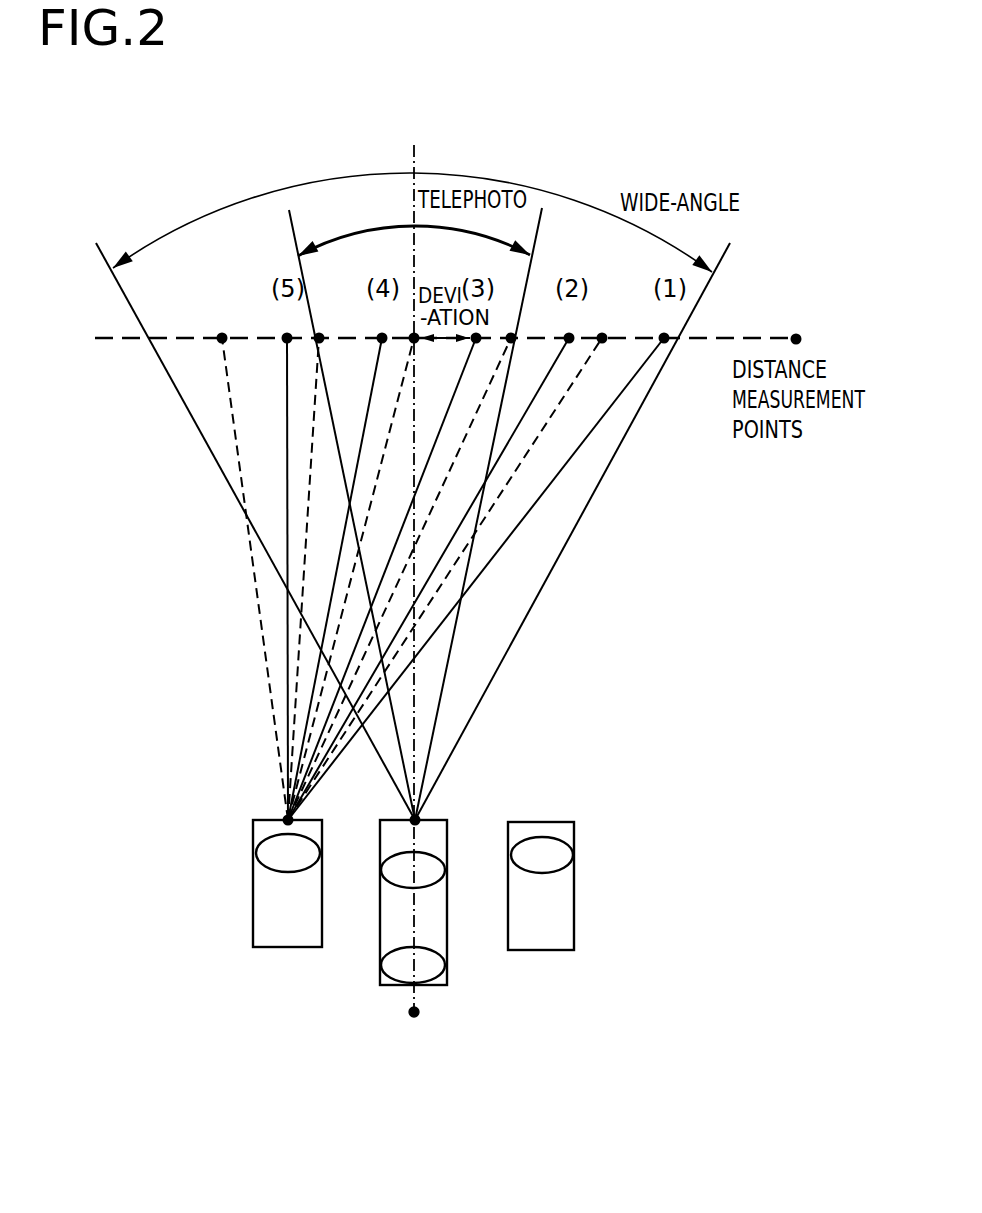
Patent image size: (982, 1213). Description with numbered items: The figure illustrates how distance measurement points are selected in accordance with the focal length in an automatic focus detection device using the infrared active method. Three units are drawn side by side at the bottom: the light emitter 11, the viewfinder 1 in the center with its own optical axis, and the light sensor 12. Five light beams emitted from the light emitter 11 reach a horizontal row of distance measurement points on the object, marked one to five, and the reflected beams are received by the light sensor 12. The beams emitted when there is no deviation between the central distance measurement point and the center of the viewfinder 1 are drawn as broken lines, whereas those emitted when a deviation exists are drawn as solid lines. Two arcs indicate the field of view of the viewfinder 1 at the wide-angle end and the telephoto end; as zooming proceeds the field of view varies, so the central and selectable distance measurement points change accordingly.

The viewfinder 1 is at (447, 840).
The light emitter 11 is at (253, 882).
The light sensor 12 is at (574, 878).